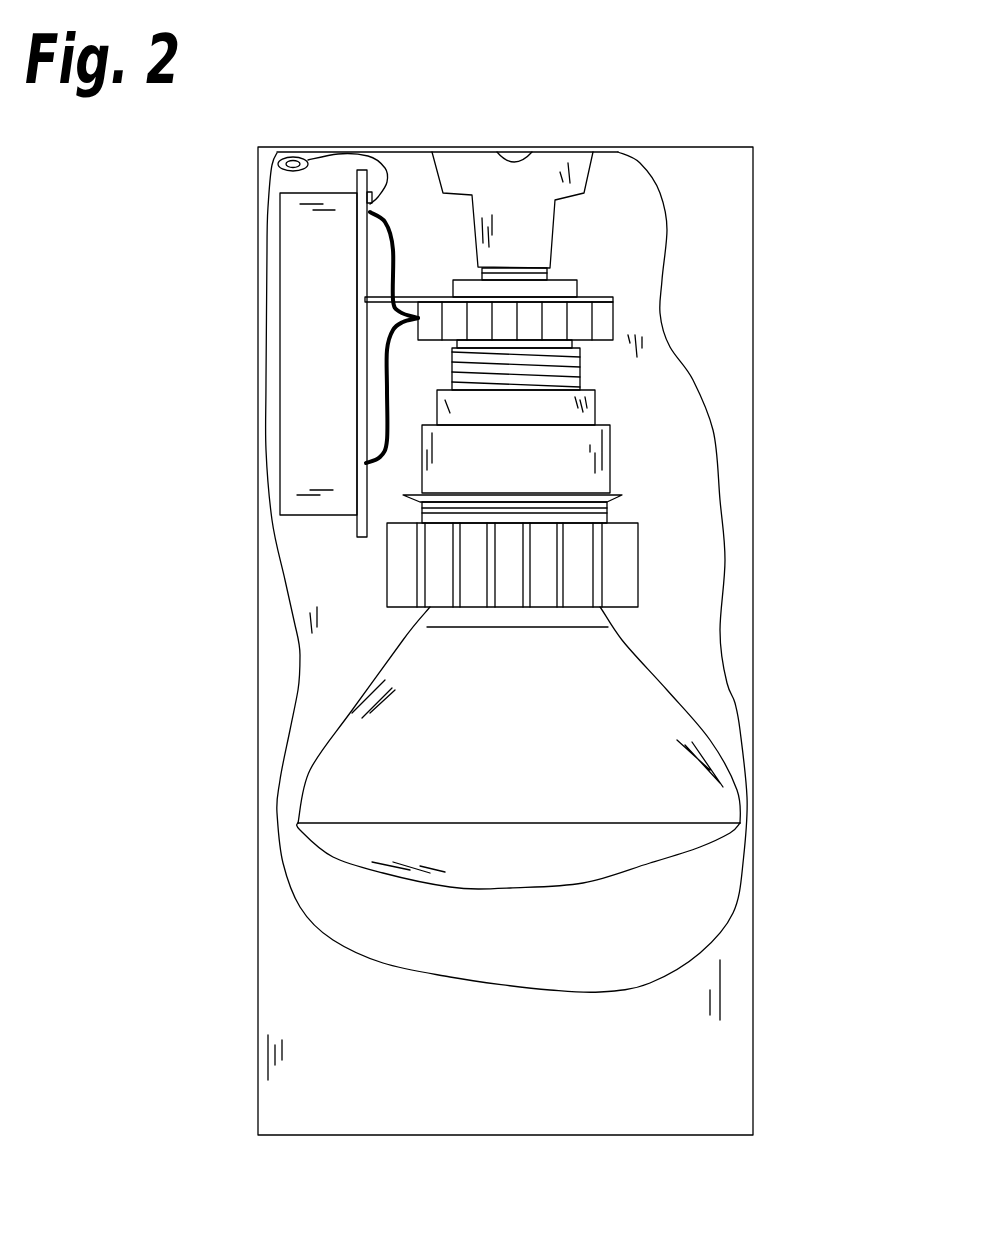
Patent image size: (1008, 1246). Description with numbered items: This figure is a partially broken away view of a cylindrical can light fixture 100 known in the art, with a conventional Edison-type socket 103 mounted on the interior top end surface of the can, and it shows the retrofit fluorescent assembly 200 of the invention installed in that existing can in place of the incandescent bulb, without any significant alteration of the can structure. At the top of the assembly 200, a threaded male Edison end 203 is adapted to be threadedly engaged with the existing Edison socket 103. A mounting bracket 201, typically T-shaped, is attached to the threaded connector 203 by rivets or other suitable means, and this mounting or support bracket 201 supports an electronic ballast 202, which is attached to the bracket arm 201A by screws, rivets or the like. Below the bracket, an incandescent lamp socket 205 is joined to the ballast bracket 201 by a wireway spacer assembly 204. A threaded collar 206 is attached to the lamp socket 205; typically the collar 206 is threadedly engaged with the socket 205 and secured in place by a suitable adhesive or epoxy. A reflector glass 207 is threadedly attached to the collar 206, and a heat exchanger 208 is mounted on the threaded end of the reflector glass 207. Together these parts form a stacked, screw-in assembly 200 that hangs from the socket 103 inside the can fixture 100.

The cylindrical light fixture 100 is at (228, 897).
The retrofit fluorescent assembly 200 is at (340, 587).
The Edison-type socket 103 is at (531, 177).
The mounting bracket 201 is at (616, 296).
The bracket arm 201A is at (360, 523).
The electronic ballast 202 is at (327, 327).
The threaded male Edison end 203 is at (535, 275).
The wireway spacer assembly 204 is at (597, 318).
The incandescent lamp socket 205 is at (548, 377).
The threaded collar 206 is at (583, 465).
The reflector glass 207 is at (403, 766).
The heat exchanger 208 is at (620, 558).